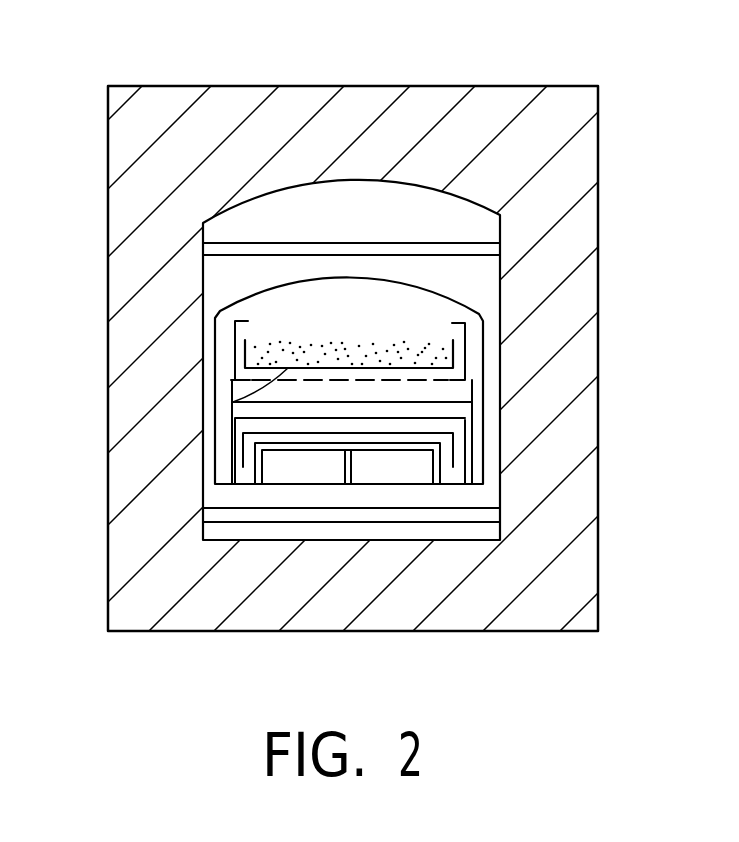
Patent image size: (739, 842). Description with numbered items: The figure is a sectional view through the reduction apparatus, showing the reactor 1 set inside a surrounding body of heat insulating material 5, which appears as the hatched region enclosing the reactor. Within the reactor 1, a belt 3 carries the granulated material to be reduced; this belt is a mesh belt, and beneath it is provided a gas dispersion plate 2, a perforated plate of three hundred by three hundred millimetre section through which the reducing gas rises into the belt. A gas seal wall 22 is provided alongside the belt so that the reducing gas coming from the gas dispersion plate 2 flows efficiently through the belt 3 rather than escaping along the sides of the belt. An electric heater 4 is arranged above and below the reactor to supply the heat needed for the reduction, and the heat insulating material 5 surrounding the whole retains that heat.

The reactor 1 is at (460, 302).
The gas dispersion plate 2 is at (467, 380).
The belt 3 is at (334, 436).
The electric heater 4 is at (386, 243).
The heat insulating material 5 is at (175, 86).
The gas seal wall 22 is at (235, 345).